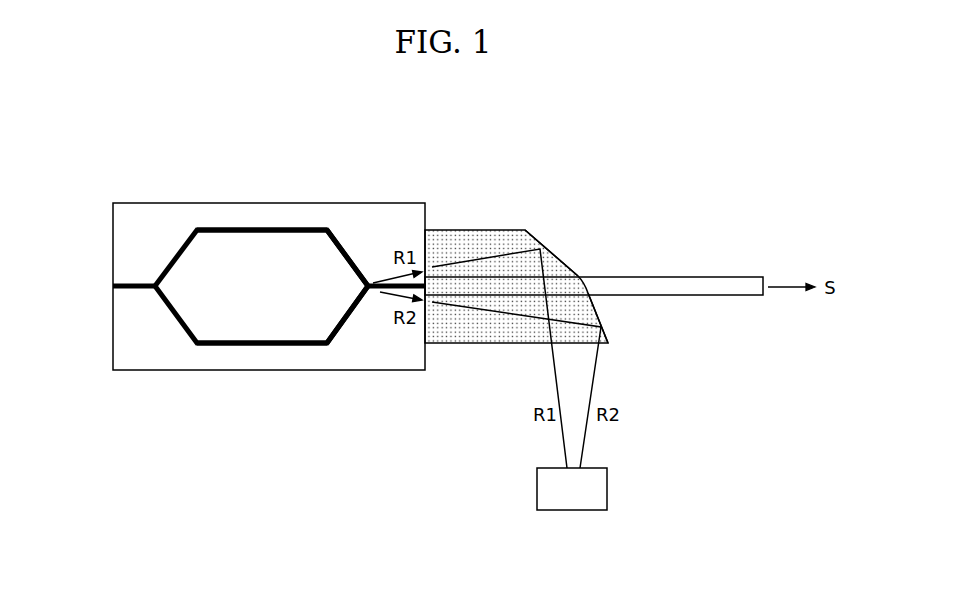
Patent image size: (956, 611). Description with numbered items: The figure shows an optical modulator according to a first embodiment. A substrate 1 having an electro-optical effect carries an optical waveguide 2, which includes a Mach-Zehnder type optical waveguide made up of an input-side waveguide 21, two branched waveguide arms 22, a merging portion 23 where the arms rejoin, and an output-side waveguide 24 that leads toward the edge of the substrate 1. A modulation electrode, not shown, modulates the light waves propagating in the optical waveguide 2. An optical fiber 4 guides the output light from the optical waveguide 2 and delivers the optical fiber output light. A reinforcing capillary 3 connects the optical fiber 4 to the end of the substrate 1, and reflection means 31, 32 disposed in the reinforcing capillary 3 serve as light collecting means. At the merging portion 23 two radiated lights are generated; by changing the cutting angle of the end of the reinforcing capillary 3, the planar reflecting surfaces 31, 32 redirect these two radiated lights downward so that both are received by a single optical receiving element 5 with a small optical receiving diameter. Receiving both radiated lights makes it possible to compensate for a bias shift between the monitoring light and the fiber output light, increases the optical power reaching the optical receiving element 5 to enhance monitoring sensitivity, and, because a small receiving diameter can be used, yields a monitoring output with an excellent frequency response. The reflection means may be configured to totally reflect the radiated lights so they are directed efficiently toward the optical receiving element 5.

The substrate 1 is at (198, 217).
The optical waveguide 2 is at (235, 220).
The Mach-Zehnder type optical waveguide portion 21 is at (140, 288).
The Mach-Zehnder type optical waveguide portion 22 is at (236, 328).
The merging portion 23 is at (367, 286).
The Mach-Zehnder type optical waveguide portion 24 is at (383, 280).
The reinforcing capillary 3 is at (520, 330).
The reflection means 31 is at (558, 260).
The reflection means 32 is at (602, 328).
The optical fiber 4 is at (690, 285).
The optical receiving element 5 is at (590, 490).